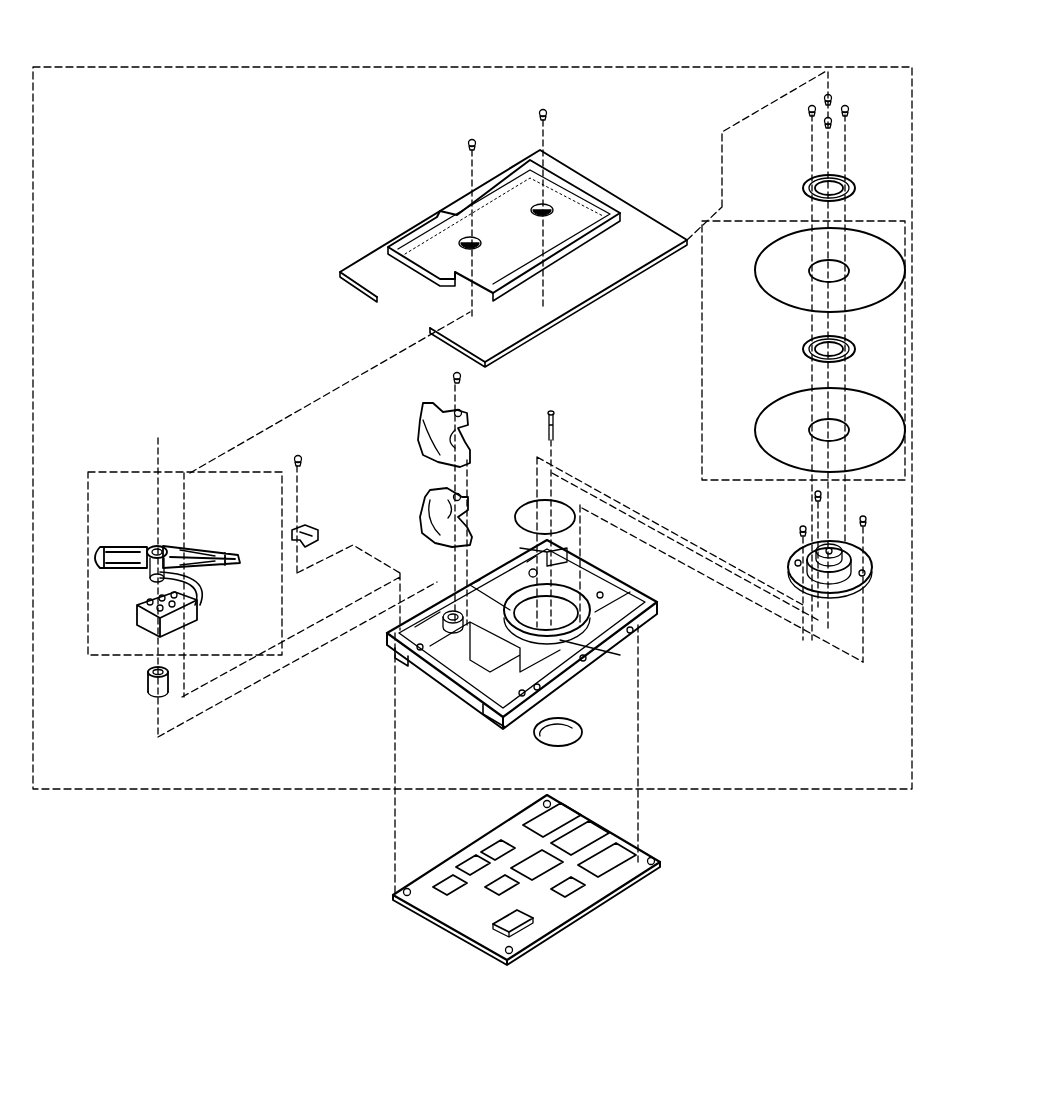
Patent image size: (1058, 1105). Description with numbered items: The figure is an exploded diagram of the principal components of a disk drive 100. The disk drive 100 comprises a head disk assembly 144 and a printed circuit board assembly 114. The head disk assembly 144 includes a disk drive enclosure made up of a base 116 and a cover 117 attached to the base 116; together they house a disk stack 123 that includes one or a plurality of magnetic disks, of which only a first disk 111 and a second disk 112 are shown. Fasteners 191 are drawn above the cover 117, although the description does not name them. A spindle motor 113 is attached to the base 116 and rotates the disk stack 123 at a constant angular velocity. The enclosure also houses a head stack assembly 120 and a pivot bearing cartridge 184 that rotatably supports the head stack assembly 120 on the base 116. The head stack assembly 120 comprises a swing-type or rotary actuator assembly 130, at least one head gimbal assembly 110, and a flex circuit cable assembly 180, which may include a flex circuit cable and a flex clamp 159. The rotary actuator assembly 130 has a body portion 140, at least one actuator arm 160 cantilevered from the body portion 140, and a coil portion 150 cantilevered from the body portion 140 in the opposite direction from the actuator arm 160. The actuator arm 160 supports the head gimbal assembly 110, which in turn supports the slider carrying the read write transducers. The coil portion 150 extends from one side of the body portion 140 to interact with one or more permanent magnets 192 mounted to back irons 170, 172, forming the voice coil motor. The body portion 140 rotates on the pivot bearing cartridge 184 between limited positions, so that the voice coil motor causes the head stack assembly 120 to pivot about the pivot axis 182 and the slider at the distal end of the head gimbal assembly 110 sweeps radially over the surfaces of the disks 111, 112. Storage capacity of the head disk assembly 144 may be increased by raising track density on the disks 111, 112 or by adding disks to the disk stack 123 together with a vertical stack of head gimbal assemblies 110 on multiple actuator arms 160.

The disk drive 100 is at (190, 50).
The head gimbal assembly 110 is at (210, 550).
The first disk 111 is at (769, 410).
The second disk 112 is at (778, 302).
The spindle motor 113 is at (800, 562).
The printed circuit board assembly 114 is at (582, 916).
The base 116 is at (645, 636).
The cover 117 is at (421, 228).
The head stack assembly 120 is at (118, 470).
The disk stack 123 is at (700, 343).
The rotary actuator assembly 130 is at (165, 510).
The body portion 140 is at (173, 538).
The head disk assembly 144 is at (794, 791).
The coil portion 150 is at (113, 578).
The flex clamp 159 is at (158, 620).
The actuator arm 160 is at (180, 567).
The back iron 170 is at (422, 418).
The back iron 172 is at (448, 487).
The flex circuit cable assembly 180 is at (197, 620).
The pivot axis 182 is at (176, 443).
The pivot bearing cartridge 184 is at (148, 688).
The cover screw 191 is at (470, 140).
The permanent magnets 192 is at (435, 513).